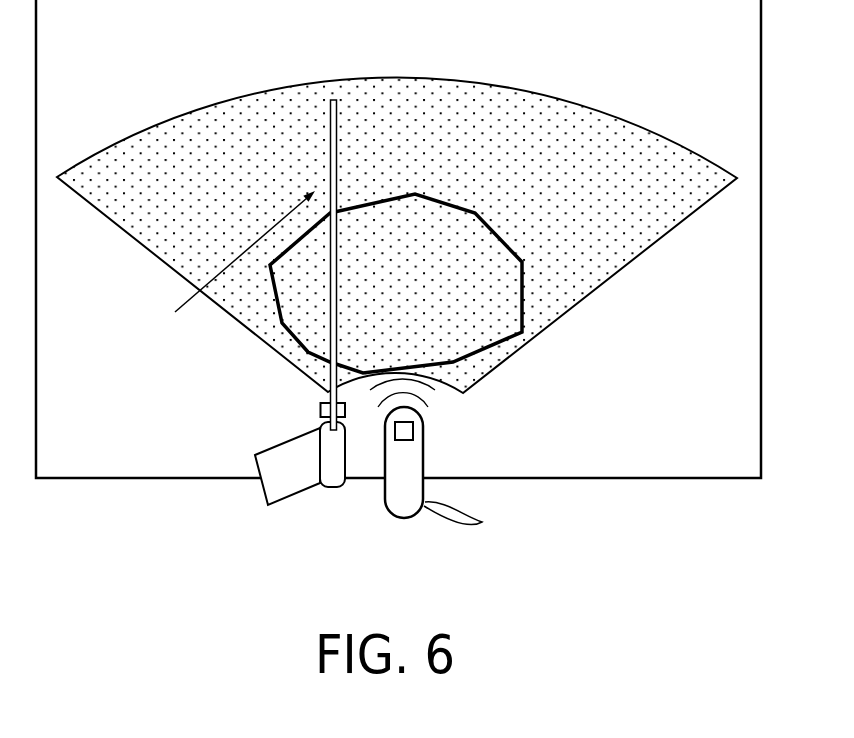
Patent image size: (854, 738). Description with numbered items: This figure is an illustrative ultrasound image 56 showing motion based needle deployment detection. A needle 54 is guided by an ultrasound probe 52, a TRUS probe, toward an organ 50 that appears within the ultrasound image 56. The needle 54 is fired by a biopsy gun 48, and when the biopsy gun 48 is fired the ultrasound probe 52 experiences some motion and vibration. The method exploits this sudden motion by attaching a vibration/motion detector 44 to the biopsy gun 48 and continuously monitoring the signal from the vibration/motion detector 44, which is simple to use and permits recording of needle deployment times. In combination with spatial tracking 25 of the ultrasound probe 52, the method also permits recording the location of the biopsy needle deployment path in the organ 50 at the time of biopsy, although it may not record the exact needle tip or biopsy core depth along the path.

The ultrasound image 56 is at (743, 34).
The needle 54 is at (229, 260).
The organ 50 is at (524, 298).
The vibration/motion detector 44 is at (320, 410).
The biopsy gun 48 is at (333, 488).
The spatial tracking 25 is at (413, 430).
The ultrasound probe 52 is at (415, 465).